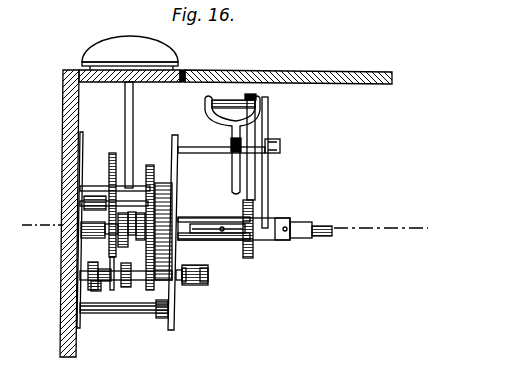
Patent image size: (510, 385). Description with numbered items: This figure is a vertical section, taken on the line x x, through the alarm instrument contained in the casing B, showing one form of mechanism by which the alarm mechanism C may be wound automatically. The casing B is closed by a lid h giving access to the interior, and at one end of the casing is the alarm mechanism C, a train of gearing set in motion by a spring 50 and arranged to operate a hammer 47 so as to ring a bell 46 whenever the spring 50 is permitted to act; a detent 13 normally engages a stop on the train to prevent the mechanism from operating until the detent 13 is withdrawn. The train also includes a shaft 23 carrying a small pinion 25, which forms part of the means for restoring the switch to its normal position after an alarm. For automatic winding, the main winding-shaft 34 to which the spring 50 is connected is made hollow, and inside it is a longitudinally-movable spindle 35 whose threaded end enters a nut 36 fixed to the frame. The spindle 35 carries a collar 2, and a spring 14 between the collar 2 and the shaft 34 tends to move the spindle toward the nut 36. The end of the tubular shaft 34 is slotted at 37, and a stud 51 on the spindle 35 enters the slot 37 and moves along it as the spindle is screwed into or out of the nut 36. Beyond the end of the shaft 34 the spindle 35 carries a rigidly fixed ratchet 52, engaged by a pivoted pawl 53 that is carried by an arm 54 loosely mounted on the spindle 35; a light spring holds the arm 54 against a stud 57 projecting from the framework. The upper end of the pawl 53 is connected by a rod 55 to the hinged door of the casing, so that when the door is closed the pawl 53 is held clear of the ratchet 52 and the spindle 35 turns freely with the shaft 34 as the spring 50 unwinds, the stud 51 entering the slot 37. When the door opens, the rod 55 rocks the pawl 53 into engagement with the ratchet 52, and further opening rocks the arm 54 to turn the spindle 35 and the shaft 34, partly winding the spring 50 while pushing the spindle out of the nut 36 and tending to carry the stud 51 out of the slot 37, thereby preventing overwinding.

The casing B is at (63, 148).
The lid h is at (299, 57).
The bell 46 is at (130, 53).
The hammer 47 is at (131, 139).
The alarm mechanism C is at (178, 232).
The detent 13 is at (124, 302).
The nut 36 is at (82, 232).
The collar 2 is at (126, 266).
The spindle 35 is at (106, 195).
The spring 14 is at (146, 195).
The spring 50 is at (163, 231).
The rod 55 is at (231, 133).
The pawl 53 is at (255, 172).
The arm 54 is at (266, 196).
The stud 57 is at (276, 147).
The stud 51 is at (233, 239).
The main winding-shaft 34 is at (188, 219).
The slot 37 is at (214, 224).
The ratchet 52 is at (253, 246).
The pinion 25 is at (203, 269).
The shaft 23 is at (209, 278).
The section line x is at (221, 225).